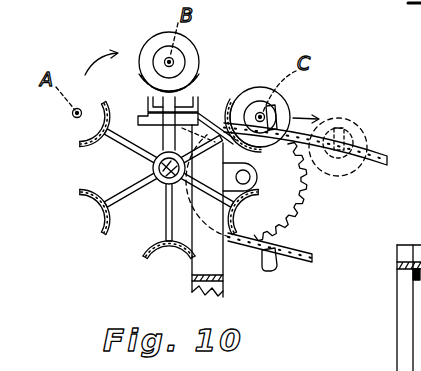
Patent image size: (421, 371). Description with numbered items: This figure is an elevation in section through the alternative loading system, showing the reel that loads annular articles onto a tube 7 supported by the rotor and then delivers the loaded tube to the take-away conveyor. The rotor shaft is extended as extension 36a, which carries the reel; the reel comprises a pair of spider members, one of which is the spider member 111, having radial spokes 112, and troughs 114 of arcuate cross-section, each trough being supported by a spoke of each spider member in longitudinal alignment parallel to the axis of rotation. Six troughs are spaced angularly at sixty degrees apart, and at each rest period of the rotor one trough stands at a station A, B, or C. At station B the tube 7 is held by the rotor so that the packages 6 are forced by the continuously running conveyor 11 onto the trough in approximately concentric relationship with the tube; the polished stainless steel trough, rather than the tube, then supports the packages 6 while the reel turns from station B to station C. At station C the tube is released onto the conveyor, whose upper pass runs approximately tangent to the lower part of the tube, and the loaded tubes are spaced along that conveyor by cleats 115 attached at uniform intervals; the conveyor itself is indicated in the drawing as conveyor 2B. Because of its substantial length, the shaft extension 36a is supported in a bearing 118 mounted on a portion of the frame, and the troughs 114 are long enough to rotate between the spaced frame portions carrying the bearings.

The conveyor strip 2B is at (380, 147).
The packages 6 is at (191, 42).
The tube 7 is at (166, 59).
The conveyor 11 is at (201, 93).
The shaft extension 36a is at (167, 154).
The spider member 111 is at (157, 193).
The radial spokes 112 is at (116, 148).
The troughs 114 is at (82, 141).
The cleats 115 is at (349, 138).
The bearing 118 is at (152, 168).